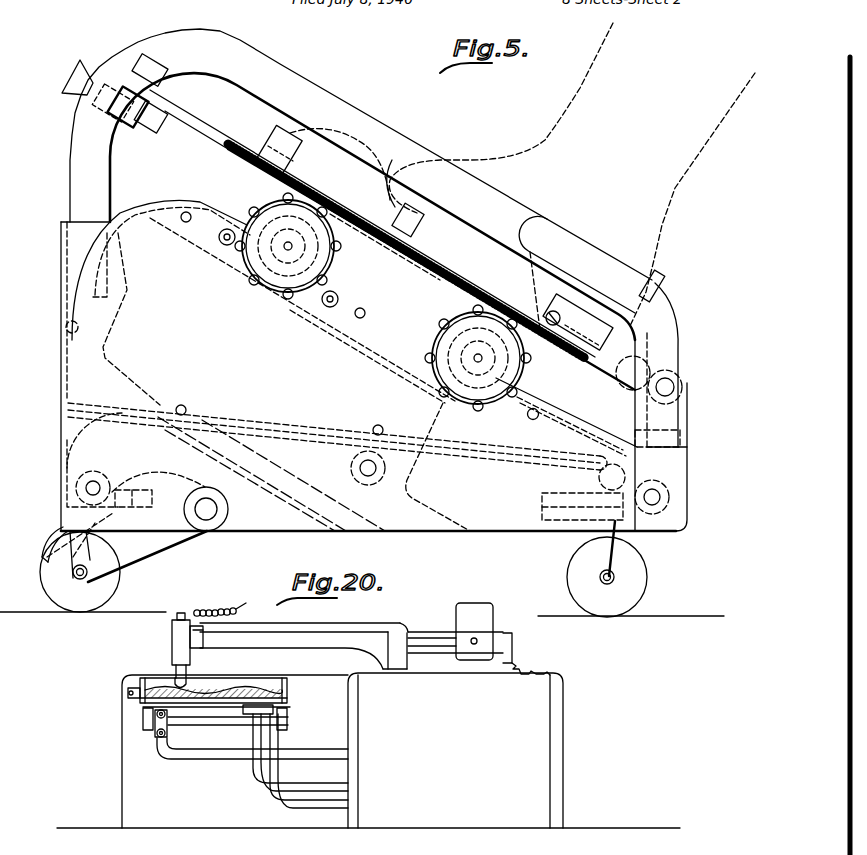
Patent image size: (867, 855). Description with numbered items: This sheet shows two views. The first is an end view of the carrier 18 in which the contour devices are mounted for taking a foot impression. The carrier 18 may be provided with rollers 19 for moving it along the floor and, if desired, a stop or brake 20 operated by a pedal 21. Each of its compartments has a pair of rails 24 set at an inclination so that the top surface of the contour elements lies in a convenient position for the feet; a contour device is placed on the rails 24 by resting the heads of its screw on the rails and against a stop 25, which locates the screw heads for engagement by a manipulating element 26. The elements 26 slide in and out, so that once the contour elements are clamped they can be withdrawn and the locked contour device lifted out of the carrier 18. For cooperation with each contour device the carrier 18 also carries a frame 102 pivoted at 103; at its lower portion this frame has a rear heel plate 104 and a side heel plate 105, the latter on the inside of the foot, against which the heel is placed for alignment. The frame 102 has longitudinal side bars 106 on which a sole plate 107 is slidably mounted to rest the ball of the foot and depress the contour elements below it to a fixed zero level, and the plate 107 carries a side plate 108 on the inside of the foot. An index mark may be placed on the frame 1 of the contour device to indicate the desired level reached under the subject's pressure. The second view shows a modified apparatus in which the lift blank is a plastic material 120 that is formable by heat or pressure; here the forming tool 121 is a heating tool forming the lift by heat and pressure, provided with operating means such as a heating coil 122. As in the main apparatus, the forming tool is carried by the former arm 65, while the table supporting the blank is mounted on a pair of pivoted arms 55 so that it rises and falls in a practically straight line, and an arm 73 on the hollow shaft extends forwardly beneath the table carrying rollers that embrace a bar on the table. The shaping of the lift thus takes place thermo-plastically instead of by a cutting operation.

In FIG. 5, the frame 1 is at (117, 368).
In FIG. 5, the carrier 18 is at (682, 474).
In FIG. 5, the rollers 19 is at (110, 581).
In FIG. 5, the stop or brake 20 is at (108, 594).
In FIG. 5, the pedal 21 is at (60, 553).
In FIG. 5, the rails 24 is at (380, 334).
In FIG. 5, the stop 25 is at (302, 258).
In FIG. 5, the manipulating element 26 is at (244, 281).
In FIG. 20, the arms 55 is at (296, 762).
In FIG. 20, the former arm 65 is at (322, 634).
In FIG. 20, the arm 73 is at (251, 747).
In FIG. 5, the frame 102 is at (150, 58).
In FIG. 5, the pivot 103 is at (670, 385).
In FIG. 5, the rear heel plate 104 is at (660, 281).
In FIG. 5, the side heel plate 105 is at (584, 237).
In FIG. 5, the longitudinal side bars 106 is at (204, 109).
In FIG. 5, the sole plate 107 is at (418, 219).
In FIG. 5, the side plate 108 is at (397, 194).
In FIG. 20, the plastic material 120 is at (205, 690).
In FIG. 20, the forming tool 121 is at (176, 680).
In FIG. 20, the heating coil 122 is at (172, 637).